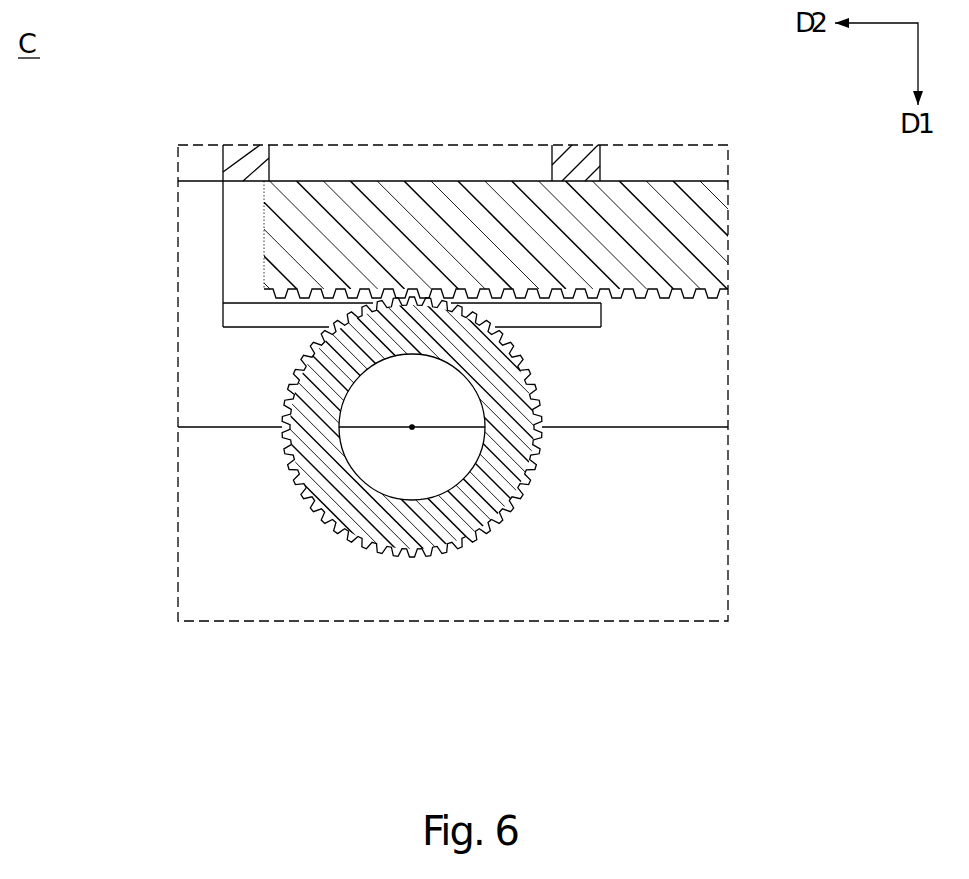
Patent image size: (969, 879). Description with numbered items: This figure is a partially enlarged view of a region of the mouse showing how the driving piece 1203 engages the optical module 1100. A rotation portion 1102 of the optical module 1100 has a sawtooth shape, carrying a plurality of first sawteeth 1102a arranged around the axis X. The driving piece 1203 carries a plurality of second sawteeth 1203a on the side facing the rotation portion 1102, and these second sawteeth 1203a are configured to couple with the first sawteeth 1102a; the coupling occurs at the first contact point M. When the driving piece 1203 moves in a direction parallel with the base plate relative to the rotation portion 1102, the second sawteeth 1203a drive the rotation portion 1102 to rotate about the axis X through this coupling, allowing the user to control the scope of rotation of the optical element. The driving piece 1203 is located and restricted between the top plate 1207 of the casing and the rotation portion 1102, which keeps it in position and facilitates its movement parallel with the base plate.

The optical module 1100 is at (405, 493).
The rotation portion 1102 is at (406, 518).
The first sawteeth 1102a is at (445, 550).
The driving piece 1203 is at (700, 224).
The second sawteeth 1203a is at (498, 297).
The top plate 1207 is at (255, 147).
The first contact point M is at (393, 207).
The axis X is at (412, 427).